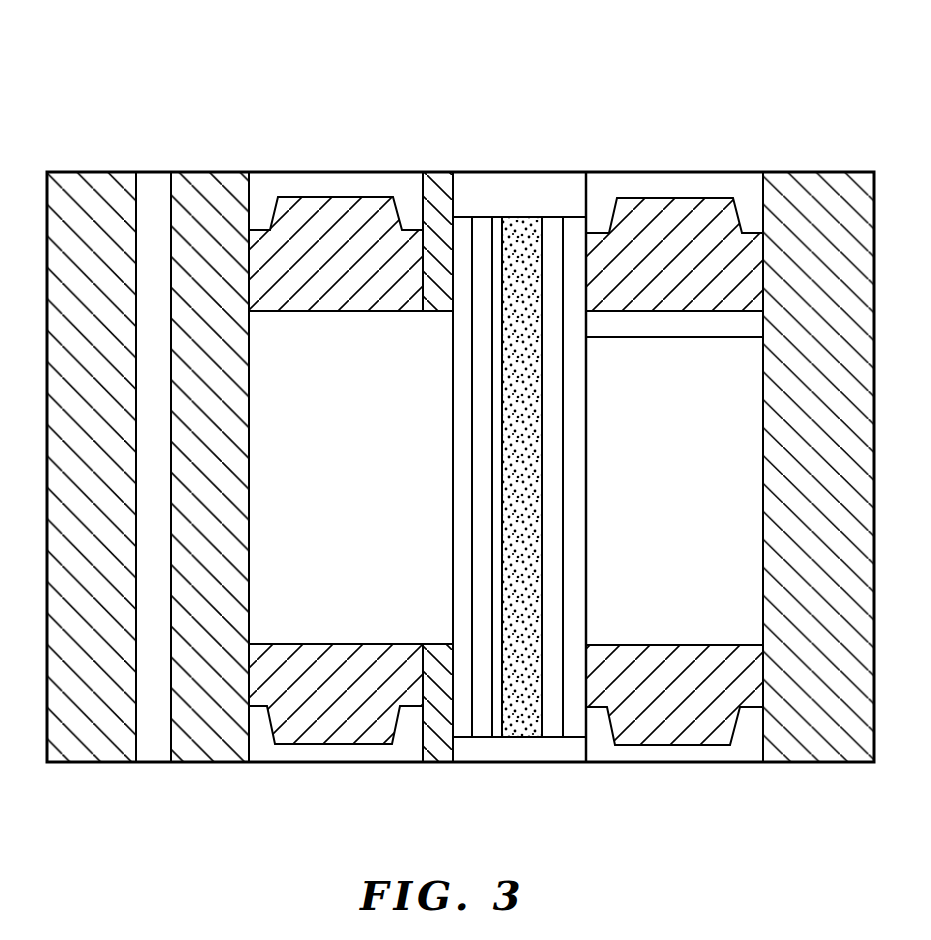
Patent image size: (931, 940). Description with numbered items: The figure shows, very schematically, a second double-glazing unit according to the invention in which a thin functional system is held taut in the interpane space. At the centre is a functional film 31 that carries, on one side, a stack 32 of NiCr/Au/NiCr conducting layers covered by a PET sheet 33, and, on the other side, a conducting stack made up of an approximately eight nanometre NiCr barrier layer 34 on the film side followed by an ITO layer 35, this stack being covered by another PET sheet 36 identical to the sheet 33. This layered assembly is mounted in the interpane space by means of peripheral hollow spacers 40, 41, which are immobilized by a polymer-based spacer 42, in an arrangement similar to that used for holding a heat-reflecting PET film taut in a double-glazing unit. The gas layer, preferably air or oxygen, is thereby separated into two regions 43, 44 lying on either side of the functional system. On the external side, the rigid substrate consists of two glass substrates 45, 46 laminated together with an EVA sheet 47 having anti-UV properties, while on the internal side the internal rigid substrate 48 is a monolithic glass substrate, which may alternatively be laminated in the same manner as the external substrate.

The functional film 31 is at (522, 218).
The stack of NiCr/Au/NiCr conducting layers 32 is at (556, 218).
The PET sheet 33 is at (575, 392).
The barrier layer 34 is at (497, 218).
The ITO layer 35 is at (482, 220).
The PET sheet 36 is at (460, 362).
The peripheral hollow spacer 40 is at (348, 266).
The peripheral hollow spacer 41 is at (685, 267).
The polymer-based spacer 42 is at (436, 752).
The gas layer region 43 is at (348, 486).
The gas layer region 44 is at (684, 486).
The glass substrate 45 is at (95, 178).
The glass substrate 46 is at (214, 178).
The EVA sheet 47 is at (155, 178).
The internal rigid substrate 48 is at (815, 180).